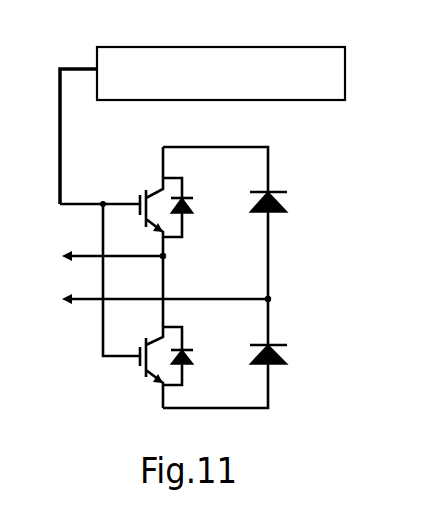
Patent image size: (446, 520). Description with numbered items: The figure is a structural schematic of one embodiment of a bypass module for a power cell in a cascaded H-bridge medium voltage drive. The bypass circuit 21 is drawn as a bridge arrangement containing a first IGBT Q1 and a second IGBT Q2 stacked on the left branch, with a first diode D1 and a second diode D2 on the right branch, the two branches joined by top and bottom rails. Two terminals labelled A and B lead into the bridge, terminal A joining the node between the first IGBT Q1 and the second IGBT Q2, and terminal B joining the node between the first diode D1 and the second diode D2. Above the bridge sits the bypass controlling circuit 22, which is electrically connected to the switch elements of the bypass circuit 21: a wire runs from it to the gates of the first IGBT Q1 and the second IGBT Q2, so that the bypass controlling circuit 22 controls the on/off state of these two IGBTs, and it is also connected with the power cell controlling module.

The bypass controlling circuit 22 is at (286, 52).
The bypass circuit 21 is at (268, 408).
The first IGBT Q1 is at (140, 199).
The second IGBT Q2 is at (157, 382).
The first diode D1 is at (290, 203).
The second diode D2 is at (287, 366).
The terminal A is at (100, 256).
The terminal B is at (153, 299).